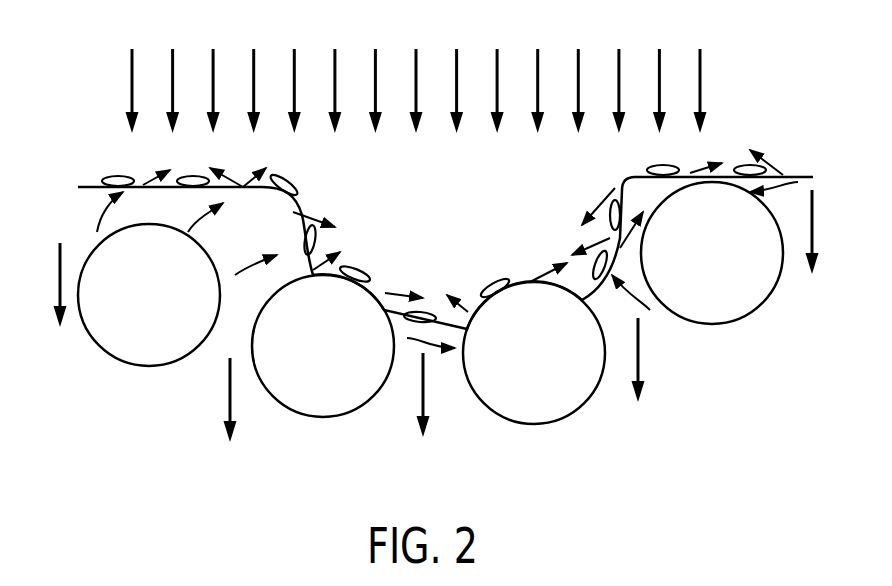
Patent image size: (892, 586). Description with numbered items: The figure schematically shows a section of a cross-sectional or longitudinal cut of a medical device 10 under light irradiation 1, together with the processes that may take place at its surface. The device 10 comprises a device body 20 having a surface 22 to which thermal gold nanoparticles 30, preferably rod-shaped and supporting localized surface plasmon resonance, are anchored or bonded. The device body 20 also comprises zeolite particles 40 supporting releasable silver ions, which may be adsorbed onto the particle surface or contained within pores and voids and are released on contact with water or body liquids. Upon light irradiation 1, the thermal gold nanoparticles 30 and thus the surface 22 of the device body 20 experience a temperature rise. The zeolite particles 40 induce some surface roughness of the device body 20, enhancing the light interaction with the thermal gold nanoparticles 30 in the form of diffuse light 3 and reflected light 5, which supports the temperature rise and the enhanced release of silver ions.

The light irradiation 1 is at (497, 58).
The device 10 is at (772, 125).
The surface 22 is at (92, 182).
The device body 20 is at (93, 200).
The diffuse light 3 is at (198, 222).
The thermal gold nanoparticles 30 is at (296, 182).
The reflected light 5 is at (312, 258).
The zeolite particles 40 is at (317, 398).